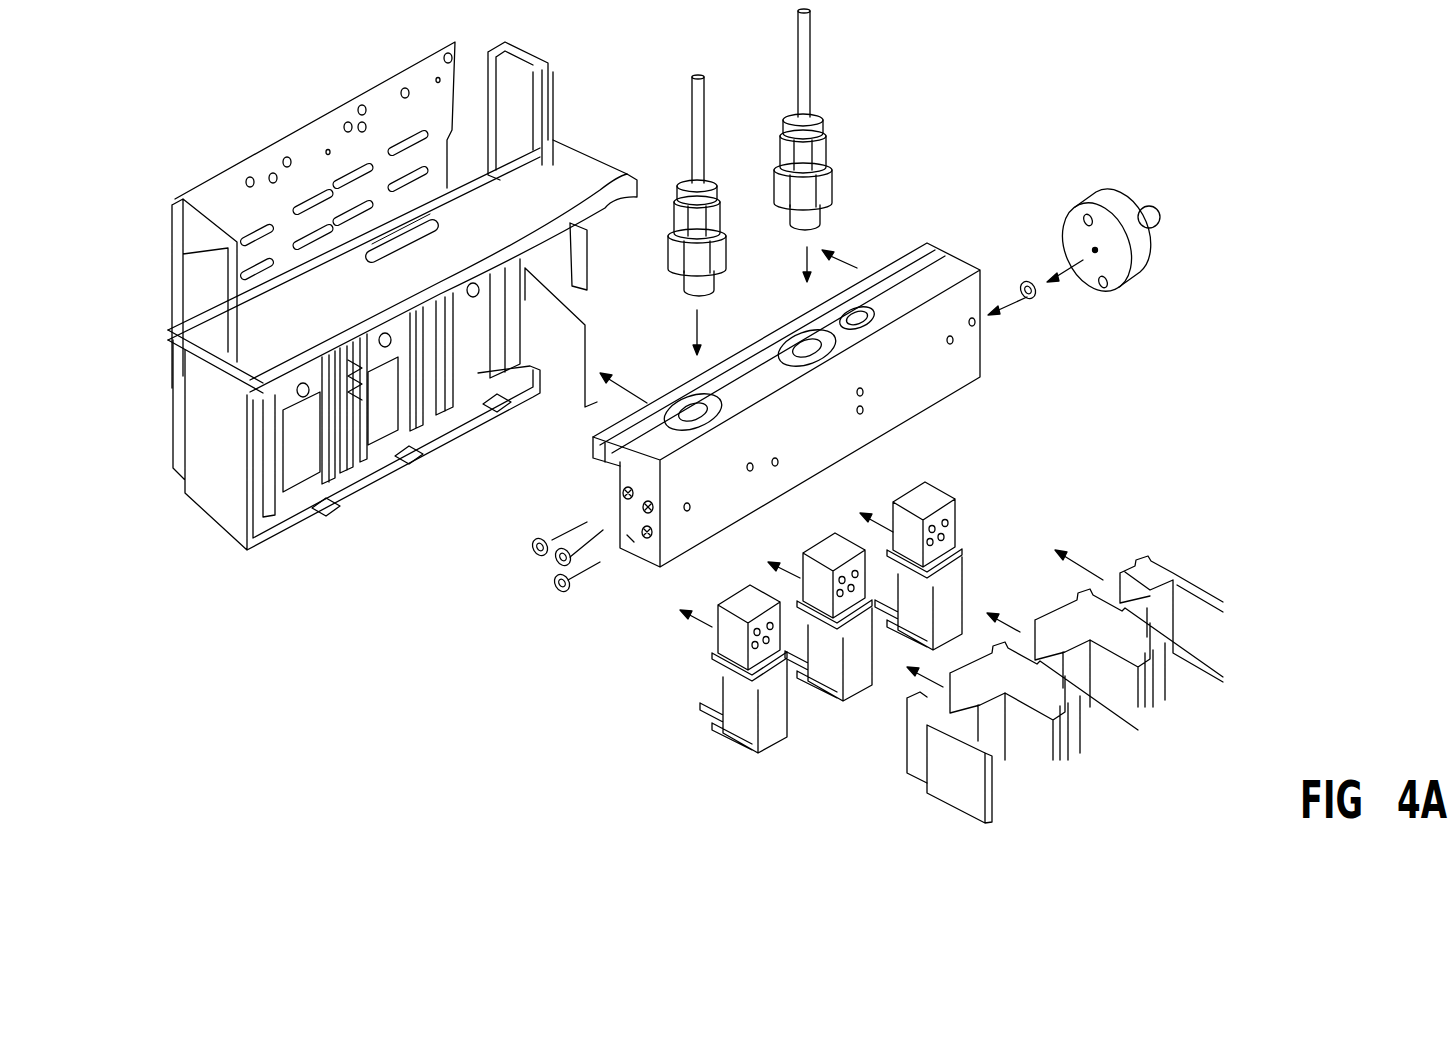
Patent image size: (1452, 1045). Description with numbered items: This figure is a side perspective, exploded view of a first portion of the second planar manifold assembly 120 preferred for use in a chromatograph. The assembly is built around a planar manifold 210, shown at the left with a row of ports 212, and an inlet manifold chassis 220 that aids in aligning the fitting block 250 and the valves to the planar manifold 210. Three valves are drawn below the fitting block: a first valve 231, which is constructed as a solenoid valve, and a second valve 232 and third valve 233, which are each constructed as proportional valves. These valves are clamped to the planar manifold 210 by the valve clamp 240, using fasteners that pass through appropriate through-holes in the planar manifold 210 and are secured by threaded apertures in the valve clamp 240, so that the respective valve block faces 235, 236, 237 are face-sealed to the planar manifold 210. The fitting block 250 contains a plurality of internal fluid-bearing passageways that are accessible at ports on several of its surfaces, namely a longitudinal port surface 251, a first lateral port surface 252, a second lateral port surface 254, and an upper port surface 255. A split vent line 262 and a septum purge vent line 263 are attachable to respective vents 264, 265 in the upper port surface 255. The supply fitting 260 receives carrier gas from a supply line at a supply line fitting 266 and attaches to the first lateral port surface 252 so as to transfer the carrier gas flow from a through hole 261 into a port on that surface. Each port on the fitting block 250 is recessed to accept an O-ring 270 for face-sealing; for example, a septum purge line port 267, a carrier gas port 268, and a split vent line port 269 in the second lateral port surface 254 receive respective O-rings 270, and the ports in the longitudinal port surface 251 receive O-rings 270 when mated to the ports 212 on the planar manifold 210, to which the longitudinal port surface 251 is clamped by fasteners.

The second planar manifold assembly 120 is at (480, 622).
The planar manifold 210 is at (403, 72).
The ports 212 is at (220, 210).
The inlet manifold chassis 220 is at (240, 528).
The first valve 231 is at (742, 730).
The second valve 232 is at (850, 692).
The third valve 233 is at (963, 588).
The valve block face 235 is at (920, 488).
The valve block face 236 is at (825, 545).
The valve block face 237 is at (738, 600).
The valve clamp 240 is at (958, 797).
The fitting block 250 is at (945, 372).
The longitudinal port surface 251 is at (588, 520).
The first lateral port surface 252 is at (955, 270).
The second lateral port surface 254 is at (635, 472).
The upper port surface 255 is at (928, 272).
The supply fitting 260 is at (1083, 198).
The through hole 261 is at (1095, 250).
The split vent line 262 is at (797, 40).
The septum purge vent line 263 is at (683, 112).
The vent 264 is at (805, 352).
The vent 265 is at (695, 412).
The supply line fitting 266 is at (1153, 207).
The septum purge line port 267 is at (622, 493).
The carrier gas port 268 is at (625, 513).
The split vent line port 269 is at (643, 538).
The O-ring 270 is at (553, 585).